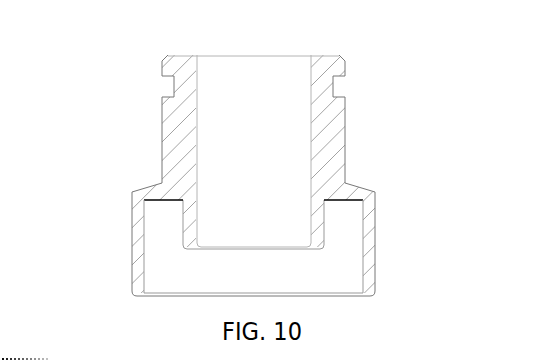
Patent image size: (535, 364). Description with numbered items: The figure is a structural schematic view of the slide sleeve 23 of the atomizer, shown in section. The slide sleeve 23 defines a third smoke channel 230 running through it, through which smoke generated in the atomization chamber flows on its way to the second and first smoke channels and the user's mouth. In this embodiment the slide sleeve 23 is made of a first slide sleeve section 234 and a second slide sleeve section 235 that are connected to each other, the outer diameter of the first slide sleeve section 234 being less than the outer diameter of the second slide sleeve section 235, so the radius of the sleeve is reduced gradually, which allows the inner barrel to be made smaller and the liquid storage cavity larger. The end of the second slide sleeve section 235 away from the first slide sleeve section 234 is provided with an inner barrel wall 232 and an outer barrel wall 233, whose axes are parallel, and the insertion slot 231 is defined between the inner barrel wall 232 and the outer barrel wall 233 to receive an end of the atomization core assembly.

The slide sleeve 23 is at (236, 33).
The third smoke channel 230 is at (268, 107).
The insertion slot 231 is at (342, 230).
The inner barrel wall 232 is at (320, 213).
The outer barrel wall 233 is at (370, 272).
The first slide sleeve section 234 is at (178, 152).
The second slide sleeve section 235 is at (133, 238).